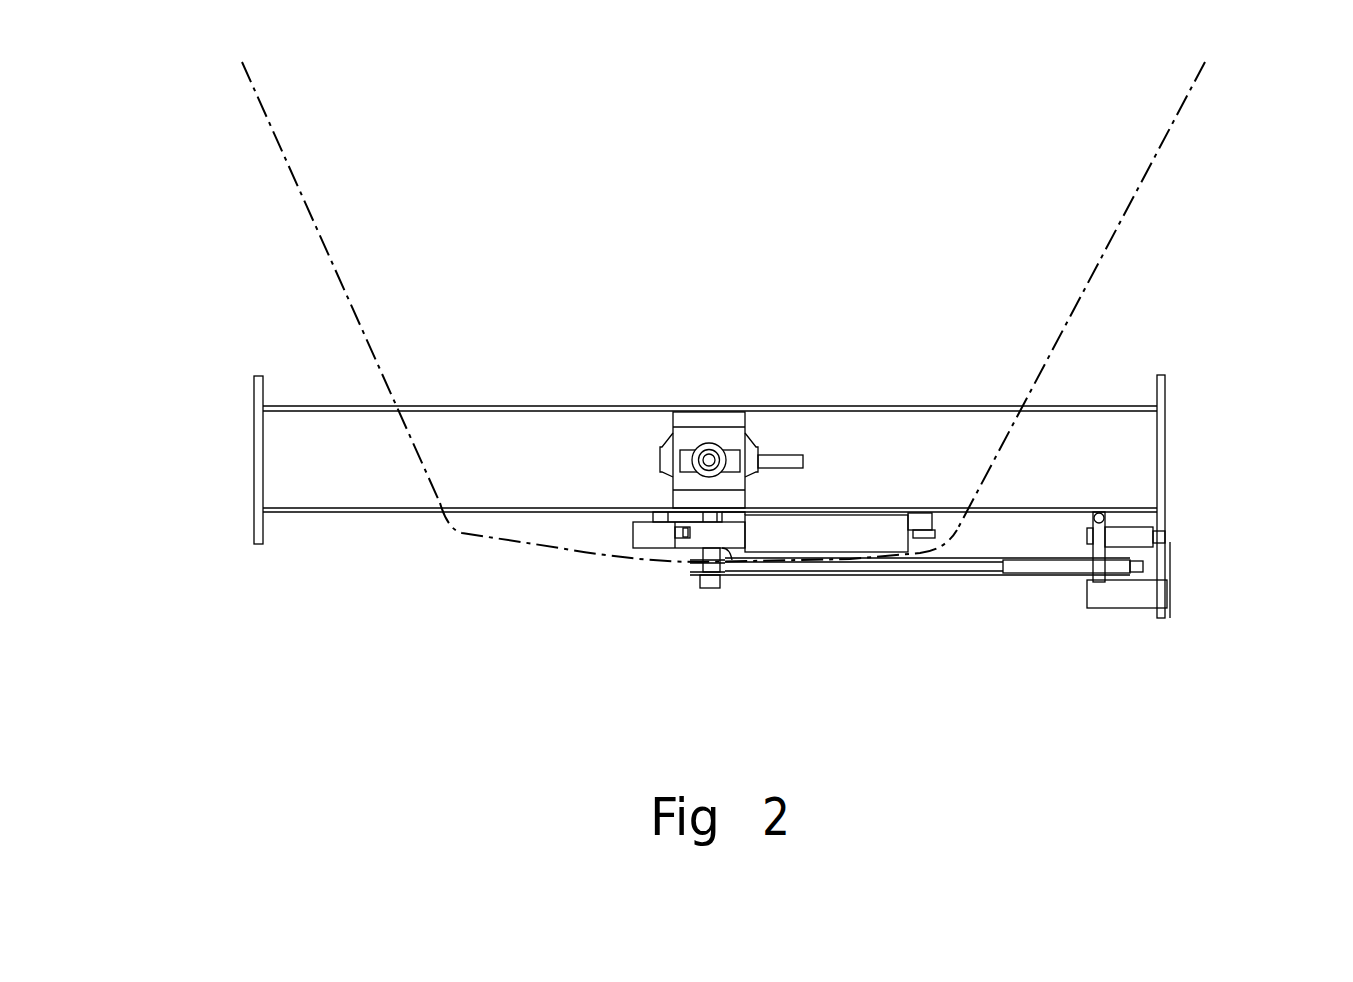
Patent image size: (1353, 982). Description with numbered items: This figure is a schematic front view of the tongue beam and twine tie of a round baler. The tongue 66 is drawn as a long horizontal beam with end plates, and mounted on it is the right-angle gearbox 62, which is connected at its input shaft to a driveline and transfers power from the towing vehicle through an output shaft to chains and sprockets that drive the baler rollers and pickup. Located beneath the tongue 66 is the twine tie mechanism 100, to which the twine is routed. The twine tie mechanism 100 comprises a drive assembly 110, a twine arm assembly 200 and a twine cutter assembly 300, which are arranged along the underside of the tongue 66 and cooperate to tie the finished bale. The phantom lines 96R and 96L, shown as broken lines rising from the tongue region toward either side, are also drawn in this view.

The twine tie mechanism 100 is at (283, 618).
The tongue 66 is at (323, 405).
The right-angle gearbox 62 is at (708, 443).
The twine arm assembly 200 is at (598, 582).
The twine cutter assembly 300 is at (1065, 597).
The drive assembly 110 is at (557, 545).
The right wing section 96R is at (300, 200).
The left wing section 96L is at (1140, 190).